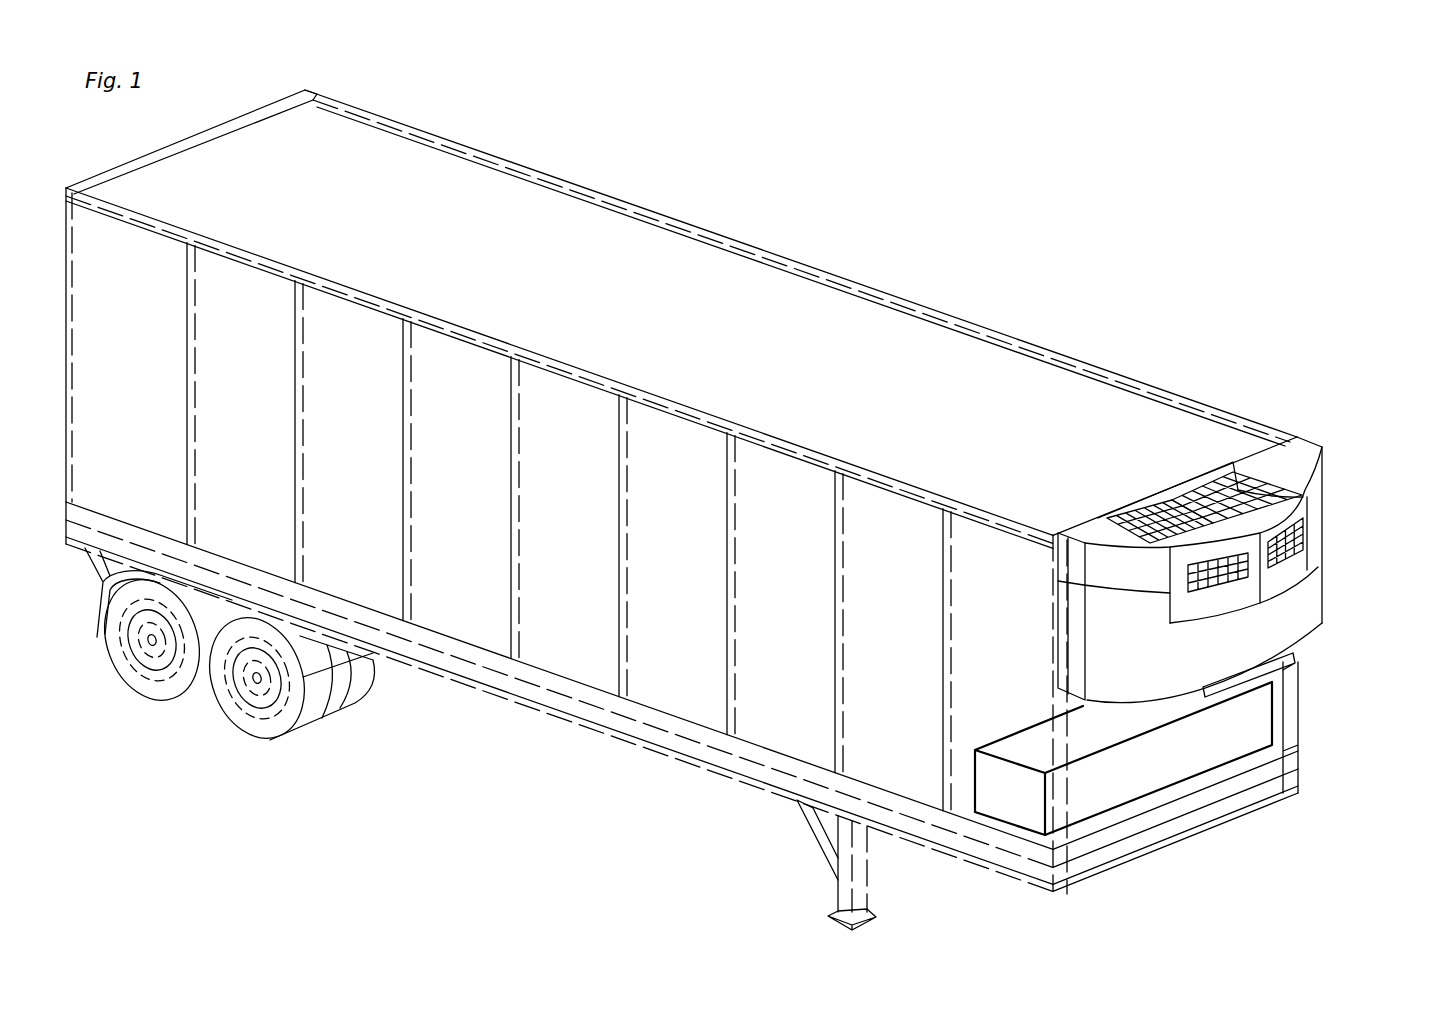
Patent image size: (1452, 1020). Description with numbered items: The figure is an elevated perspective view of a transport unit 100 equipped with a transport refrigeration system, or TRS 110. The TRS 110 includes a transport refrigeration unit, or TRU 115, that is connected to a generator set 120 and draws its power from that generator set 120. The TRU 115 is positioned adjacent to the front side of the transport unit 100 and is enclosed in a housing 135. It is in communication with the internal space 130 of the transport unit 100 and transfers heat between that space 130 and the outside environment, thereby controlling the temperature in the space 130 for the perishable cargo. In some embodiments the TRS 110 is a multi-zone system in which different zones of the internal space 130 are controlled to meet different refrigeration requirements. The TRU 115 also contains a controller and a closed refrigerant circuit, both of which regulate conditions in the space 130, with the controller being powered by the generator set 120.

The transport unit 100 is at (1062, 203).
The TRS 110 is at (1318, 420).
The TRU 115 is at (1318, 600).
The generator set 120 is at (1275, 715).
The internal space 130 is at (917, 427).
The housing 135 is at (1318, 541).